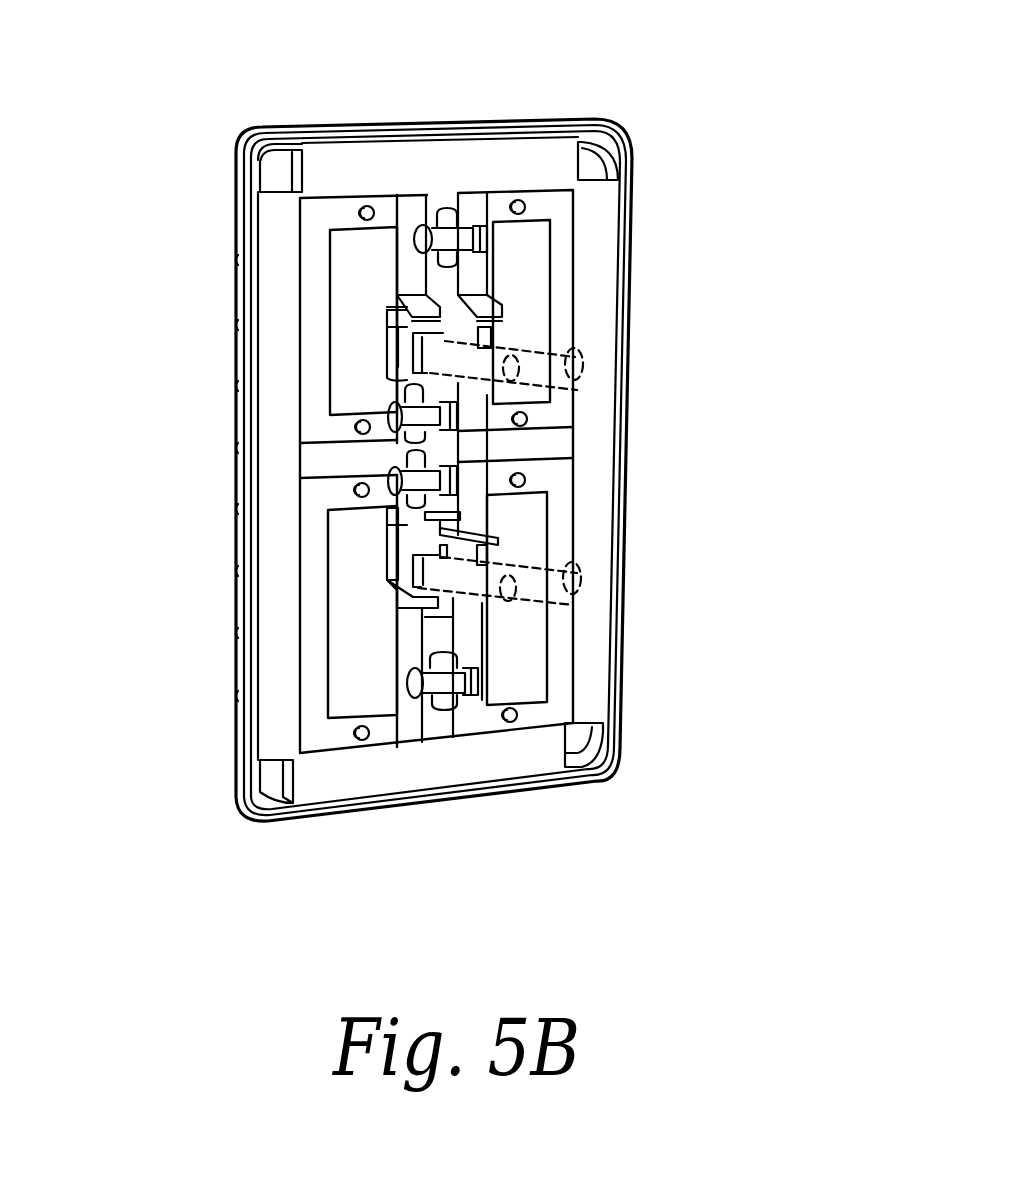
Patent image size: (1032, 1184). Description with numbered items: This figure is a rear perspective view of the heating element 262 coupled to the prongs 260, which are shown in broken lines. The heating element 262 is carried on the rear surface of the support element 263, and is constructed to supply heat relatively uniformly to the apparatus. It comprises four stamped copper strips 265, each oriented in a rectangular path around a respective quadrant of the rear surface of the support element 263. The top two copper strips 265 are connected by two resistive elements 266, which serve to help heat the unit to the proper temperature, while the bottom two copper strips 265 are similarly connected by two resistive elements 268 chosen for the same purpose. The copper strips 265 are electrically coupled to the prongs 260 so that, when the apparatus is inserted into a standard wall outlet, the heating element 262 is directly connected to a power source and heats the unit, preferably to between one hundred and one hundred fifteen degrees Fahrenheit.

The prongs 260 is at (575, 355).
The heating element 262 is at (560, 277).
The support element 263 is at (597, 470).
The copper strips 265 is at (567, 230).
The resistive elements 266 is at (462, 227).
The resistive elements 268 is at (460, 495).